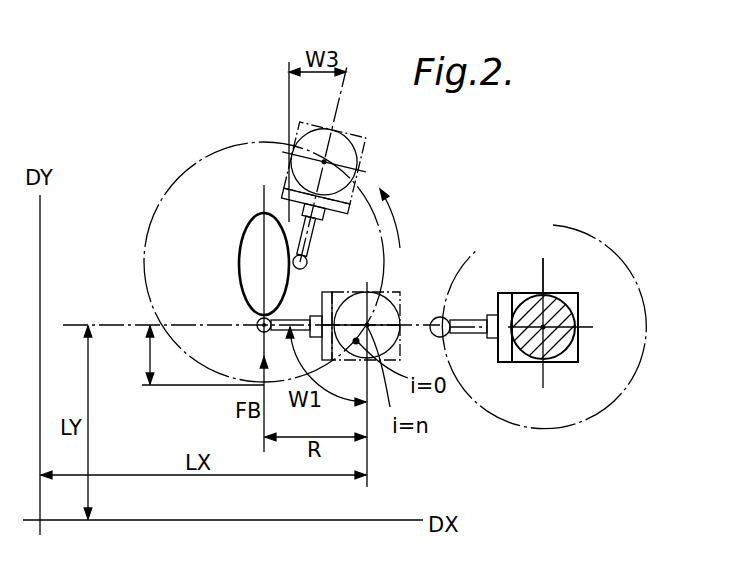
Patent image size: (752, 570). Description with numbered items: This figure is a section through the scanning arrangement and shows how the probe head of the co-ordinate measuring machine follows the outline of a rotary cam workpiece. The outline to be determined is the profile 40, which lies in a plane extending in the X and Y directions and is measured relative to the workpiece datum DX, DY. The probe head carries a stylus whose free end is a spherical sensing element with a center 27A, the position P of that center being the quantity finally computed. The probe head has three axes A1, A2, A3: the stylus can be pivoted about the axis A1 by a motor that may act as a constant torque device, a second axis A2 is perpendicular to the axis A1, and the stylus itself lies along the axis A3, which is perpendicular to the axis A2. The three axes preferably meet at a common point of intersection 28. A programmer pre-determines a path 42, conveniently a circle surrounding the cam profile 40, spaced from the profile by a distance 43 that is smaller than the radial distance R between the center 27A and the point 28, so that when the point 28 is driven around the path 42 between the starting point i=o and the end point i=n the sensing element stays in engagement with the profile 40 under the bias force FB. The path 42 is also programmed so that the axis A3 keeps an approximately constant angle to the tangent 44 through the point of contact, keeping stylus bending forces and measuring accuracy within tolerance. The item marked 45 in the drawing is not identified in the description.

The profile 40 is at (253, 235).
The path 42 is at (220, 150).
The distance 43 is at (150, 352).
The tangent 44 is at (289, 97).
The direction of rotation arrow 45 is at (393, 208).
The center of the sensing element 27A is at (260, 323).
The common point of intersection 28 is at (535, 323).
The axis A1 is at (546, 330).
The axis A2 is at (543, 263).
The axis A3 is at (473, 318).